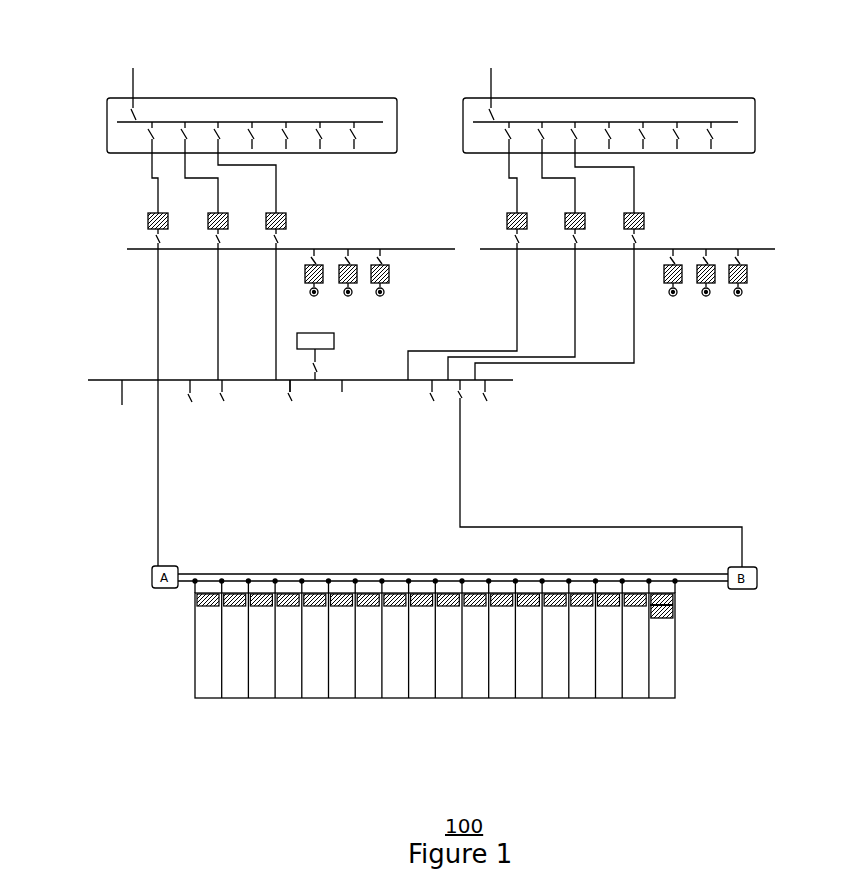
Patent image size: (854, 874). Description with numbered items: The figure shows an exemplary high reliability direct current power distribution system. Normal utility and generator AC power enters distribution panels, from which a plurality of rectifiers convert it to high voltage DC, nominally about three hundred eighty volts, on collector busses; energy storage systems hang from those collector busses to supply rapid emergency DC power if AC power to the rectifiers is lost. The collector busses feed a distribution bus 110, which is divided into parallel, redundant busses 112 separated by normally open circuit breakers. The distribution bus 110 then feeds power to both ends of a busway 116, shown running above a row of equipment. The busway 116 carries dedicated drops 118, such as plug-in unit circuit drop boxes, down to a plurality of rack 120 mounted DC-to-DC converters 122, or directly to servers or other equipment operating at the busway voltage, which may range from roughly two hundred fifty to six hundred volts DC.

The distribution bus 110 is at (220, 385).
The redundant bus 112 is at (90, 384).
The busway 116 is at (422, 574).
The dedicated drop 118 is at (193, 590).
The rack 120 is at (193, 637).
The DC-to-DC converter 122 is at (684, 611).